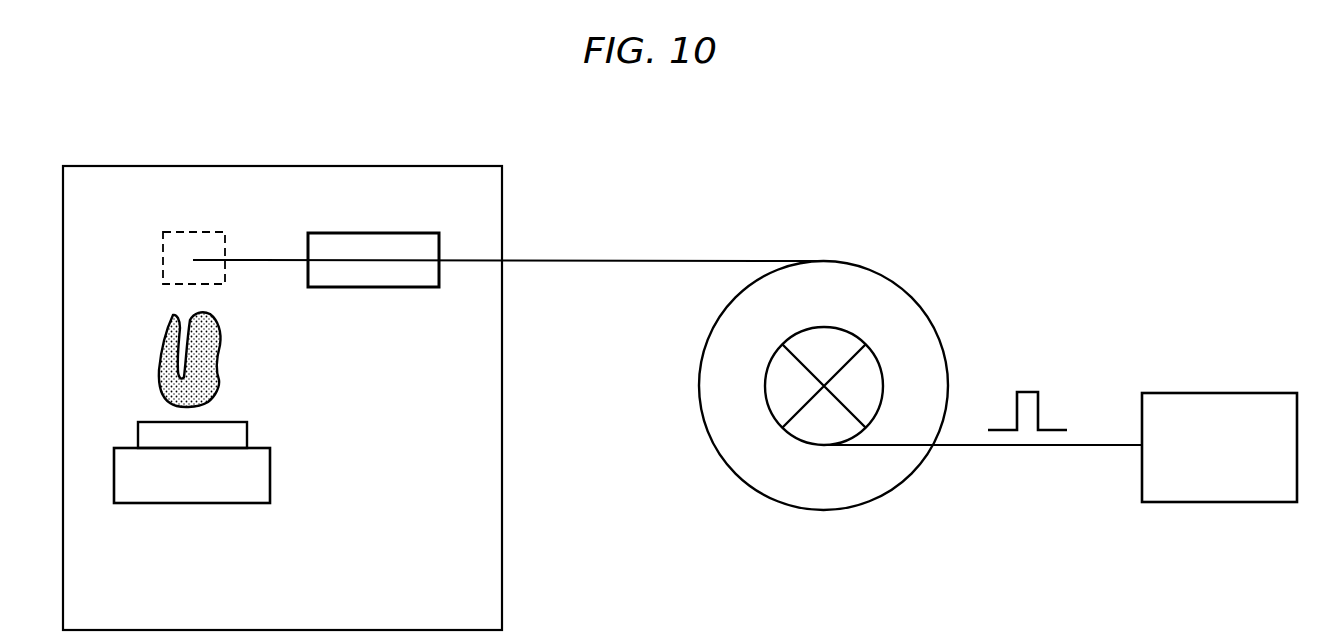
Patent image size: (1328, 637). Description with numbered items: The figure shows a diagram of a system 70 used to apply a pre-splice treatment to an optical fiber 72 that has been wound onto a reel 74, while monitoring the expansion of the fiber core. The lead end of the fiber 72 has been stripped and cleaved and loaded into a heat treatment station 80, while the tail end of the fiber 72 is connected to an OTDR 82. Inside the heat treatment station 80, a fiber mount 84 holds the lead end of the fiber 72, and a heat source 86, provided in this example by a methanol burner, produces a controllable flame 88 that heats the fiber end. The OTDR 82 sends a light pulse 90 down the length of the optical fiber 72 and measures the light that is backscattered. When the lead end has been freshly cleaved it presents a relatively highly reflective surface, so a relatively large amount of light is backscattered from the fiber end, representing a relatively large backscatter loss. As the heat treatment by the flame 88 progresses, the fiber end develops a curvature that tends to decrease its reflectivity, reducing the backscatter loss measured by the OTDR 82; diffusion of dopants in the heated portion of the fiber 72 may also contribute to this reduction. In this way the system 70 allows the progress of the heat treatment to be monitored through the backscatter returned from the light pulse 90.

The system 70 is at (1040, 128).
The optical fiber 72 is at (691, 260).
The reel 74 is at (877, 288).
The heat treatment station 80 is at (328, 166).
The OTDR 82 is at (1254, 393).
The fiber mount 84 is at (402, 232).
The heat source 86 is at (278, 418).
The flame 88 is at (222, 348).
The light pulse 90 is at (1023, 390).